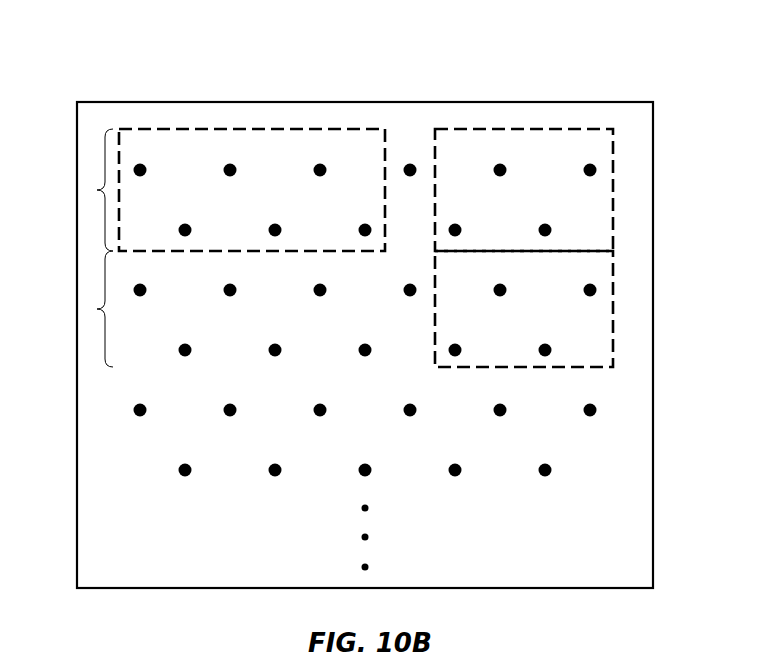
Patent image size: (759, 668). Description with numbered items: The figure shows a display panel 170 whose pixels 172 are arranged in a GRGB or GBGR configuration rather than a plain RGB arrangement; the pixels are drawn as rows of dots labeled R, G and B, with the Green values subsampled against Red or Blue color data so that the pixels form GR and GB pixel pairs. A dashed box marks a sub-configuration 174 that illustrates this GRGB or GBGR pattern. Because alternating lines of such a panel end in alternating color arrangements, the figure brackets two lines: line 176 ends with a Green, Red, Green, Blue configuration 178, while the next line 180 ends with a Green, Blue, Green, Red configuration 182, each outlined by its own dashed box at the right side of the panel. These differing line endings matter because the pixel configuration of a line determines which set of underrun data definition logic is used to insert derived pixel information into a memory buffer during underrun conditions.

The display panel 170 is at (648, 77).
The pixels 172 is at (226, 168).
The sub-configuration 174 is at (260, 127).
The line 176 is at (97, 190).
The GRGB configuration 178 is at (613, 192).
The line 180 is at (97, 309).
The GBGR configuration 182 is at (613, 310).